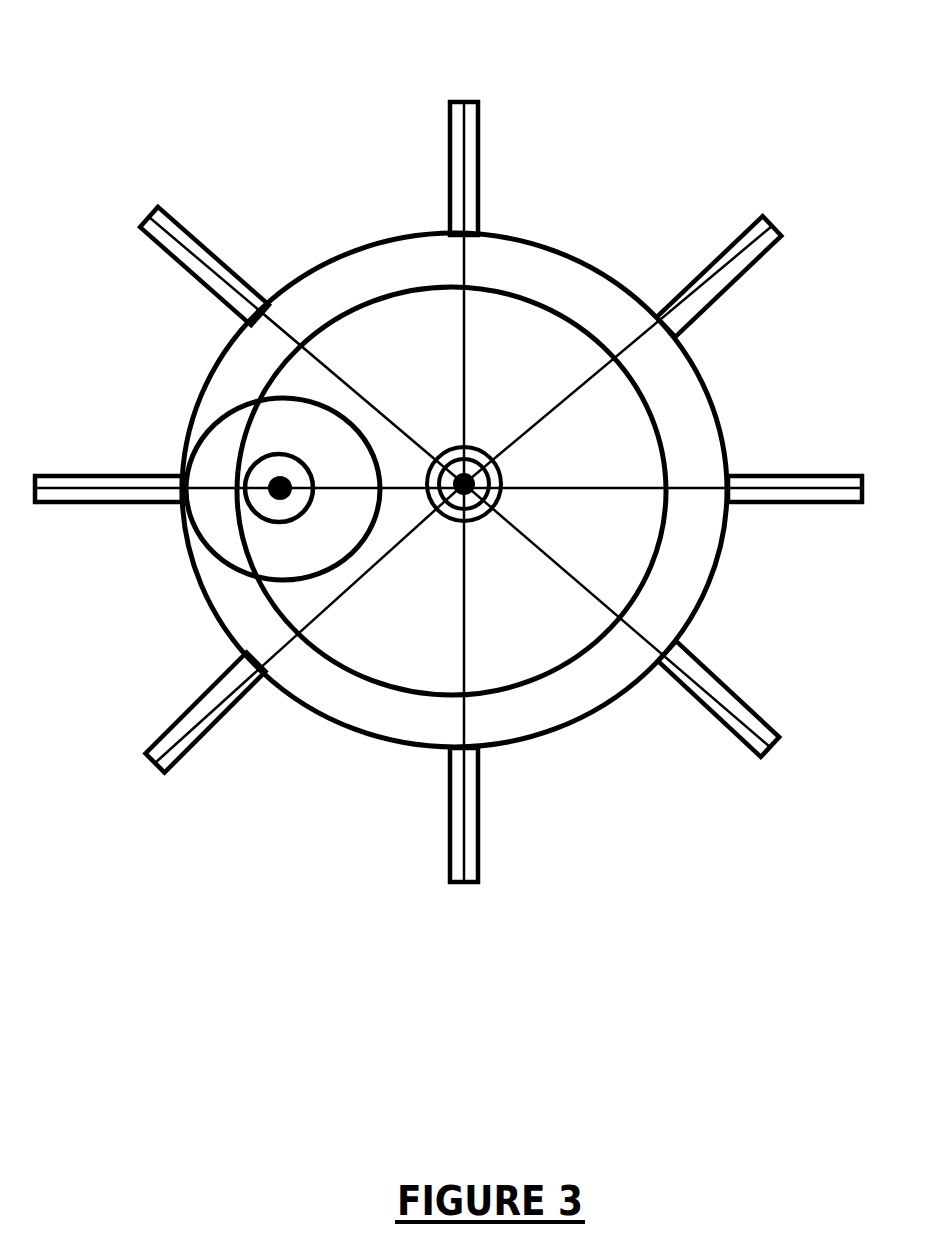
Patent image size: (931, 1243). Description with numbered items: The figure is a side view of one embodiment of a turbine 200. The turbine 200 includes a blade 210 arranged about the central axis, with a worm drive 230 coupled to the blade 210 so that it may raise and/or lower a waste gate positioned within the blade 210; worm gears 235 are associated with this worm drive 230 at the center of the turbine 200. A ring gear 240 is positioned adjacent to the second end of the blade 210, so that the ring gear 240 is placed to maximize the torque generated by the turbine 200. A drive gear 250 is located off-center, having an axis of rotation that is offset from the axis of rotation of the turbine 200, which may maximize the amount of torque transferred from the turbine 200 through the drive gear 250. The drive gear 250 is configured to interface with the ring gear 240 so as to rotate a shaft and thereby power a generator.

The turbine 200 is at (114, 101).
The blade 210 is at (480, 185).
The worm drive 230 is at (483, 519).
The worm gears 235 is at (476, 484).
The ring gear 240 is at (342, 258).
The drive gear 250 is at (217, 465).